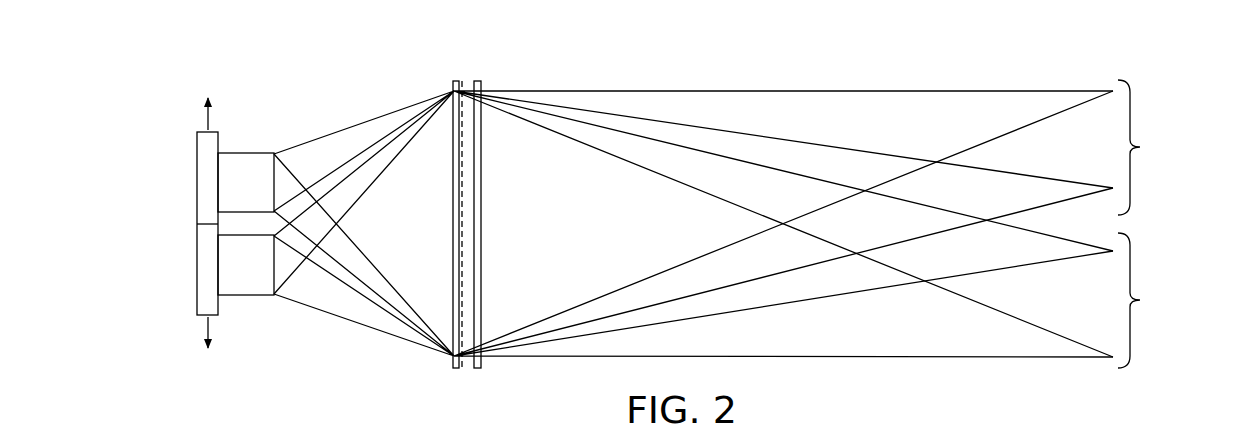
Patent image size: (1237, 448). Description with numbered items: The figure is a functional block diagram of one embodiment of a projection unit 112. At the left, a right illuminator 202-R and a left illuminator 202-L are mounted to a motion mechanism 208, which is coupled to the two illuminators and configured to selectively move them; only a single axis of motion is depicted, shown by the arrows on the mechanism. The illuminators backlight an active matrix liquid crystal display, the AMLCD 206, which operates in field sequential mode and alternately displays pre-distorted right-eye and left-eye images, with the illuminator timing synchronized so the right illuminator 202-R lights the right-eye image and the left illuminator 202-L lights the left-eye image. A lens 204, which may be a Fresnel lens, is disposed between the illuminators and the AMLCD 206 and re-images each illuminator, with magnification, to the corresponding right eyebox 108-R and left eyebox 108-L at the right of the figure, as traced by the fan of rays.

The projection unit 112 is at (163, 79).
The motion mechanism 208 is at (197, 221).
The left illuminator 202-L is at (248, 152).
The right illuminator 202-R is at (248, 296).
The lens 204 is at (456, 80).
The active matrix liquid crystal display (AMLCD) 206 is at (482, 80).
The right eyebox 108-R is at (1165, 147).
The left eyebox 108-L is at (1164, 300).